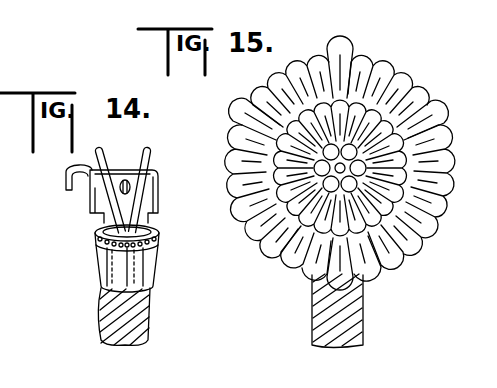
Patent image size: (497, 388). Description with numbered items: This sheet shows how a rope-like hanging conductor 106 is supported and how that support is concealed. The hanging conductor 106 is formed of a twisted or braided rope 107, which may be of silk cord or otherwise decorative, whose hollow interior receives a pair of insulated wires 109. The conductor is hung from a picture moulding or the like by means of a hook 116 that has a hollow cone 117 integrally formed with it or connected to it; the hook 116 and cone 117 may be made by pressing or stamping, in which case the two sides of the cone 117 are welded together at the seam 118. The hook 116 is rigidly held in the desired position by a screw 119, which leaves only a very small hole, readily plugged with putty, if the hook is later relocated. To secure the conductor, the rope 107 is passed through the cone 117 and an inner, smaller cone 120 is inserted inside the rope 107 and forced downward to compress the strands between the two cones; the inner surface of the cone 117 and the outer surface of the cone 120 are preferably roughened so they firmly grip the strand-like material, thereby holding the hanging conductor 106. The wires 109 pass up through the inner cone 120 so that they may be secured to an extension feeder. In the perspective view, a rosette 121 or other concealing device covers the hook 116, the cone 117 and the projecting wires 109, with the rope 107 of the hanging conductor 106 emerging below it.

In FIG. 14, the hanging conductor 106 is at (95, 332).
In FIG. 15, the hanging conductor 106 is at (302, 320).
In FIG. 14, the twisted or braided rope 107 is at (120, 316).
In FIG. 15, the twisted or braided rope 107 is at (350, 306).
In FIG. 14, the insulated wires 109 is at (151, 161).
In FIG. 14, the hook 116 is at (100, 195).
In FIG. 14, the hollow cone 117 is at (100, 266).
In FIG. 14, the weld 118 is at (152, 270).
In FIG. 14, the screw 119 is at (128, 179).
In FIG. 14, the inner cone 120 is at (154, 241).
In FIG. 15, the rosette 121 is at (392, 98).